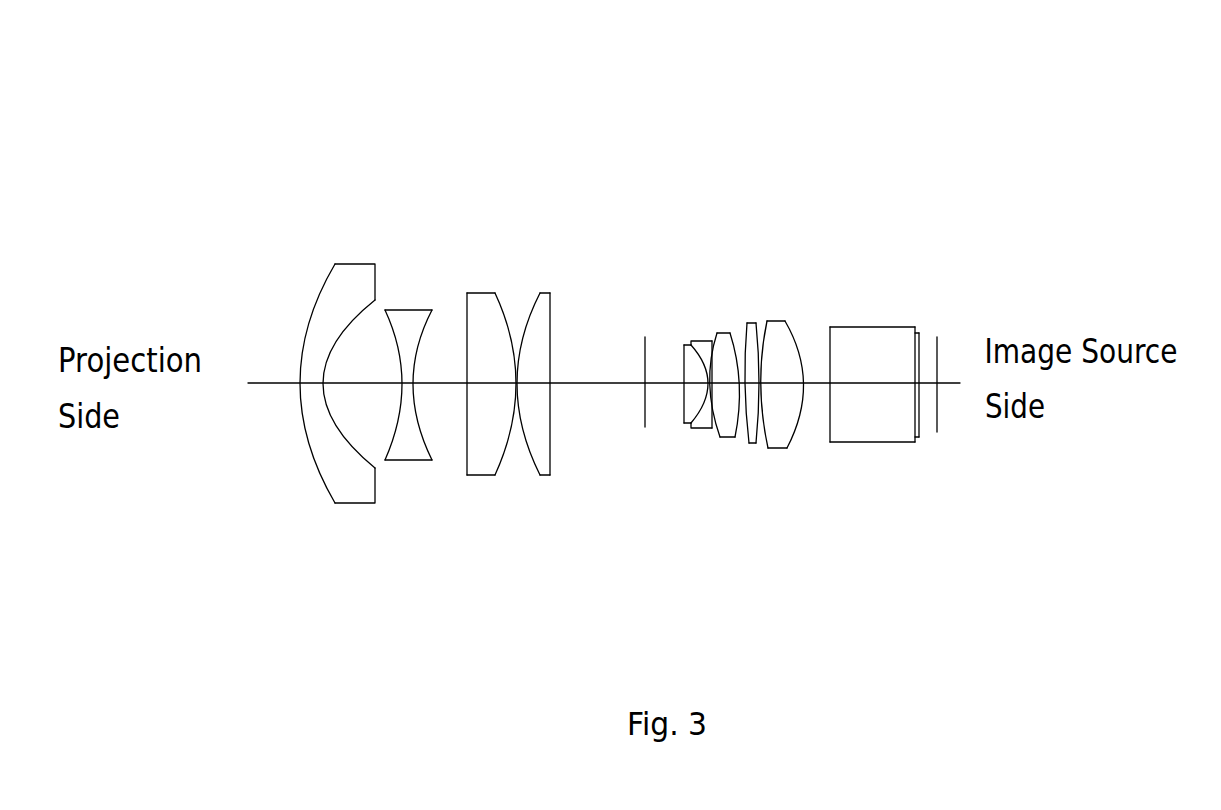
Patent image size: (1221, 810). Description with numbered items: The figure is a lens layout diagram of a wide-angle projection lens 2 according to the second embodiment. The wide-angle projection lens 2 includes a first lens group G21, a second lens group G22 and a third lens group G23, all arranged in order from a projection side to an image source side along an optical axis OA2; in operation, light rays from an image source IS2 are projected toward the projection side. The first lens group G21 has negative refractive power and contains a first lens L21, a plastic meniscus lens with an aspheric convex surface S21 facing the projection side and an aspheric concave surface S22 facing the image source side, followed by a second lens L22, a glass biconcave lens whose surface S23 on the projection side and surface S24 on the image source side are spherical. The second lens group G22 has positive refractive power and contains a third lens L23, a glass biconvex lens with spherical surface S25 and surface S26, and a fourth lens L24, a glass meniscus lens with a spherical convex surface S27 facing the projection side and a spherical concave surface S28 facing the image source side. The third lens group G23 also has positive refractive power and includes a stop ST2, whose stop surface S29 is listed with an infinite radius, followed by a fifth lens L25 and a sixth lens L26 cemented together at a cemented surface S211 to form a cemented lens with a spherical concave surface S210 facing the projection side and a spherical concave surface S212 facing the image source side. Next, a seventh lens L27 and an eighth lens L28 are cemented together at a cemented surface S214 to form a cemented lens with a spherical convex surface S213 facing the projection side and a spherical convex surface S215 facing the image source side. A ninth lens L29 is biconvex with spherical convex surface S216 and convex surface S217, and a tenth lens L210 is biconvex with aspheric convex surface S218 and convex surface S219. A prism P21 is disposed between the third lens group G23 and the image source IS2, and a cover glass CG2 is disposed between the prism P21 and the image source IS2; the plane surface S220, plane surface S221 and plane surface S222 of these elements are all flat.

The wide-angle projection lens 2 is at (360, 98).
The first lens group G21 is at (422, 170).
The second lens group G22 is at (453, 170).
The third lens group G23 is at (900, 172).
The first lens L21 is at (312, 382).
The second lens L22 is at (398, 377).
The third lens L23 is at (464, 396).
The fourth lens L24 is at (530, 381).
The stop ST2 is at (607, 335).
The fifth lens L25 is at (653, 363).
The sixth lens L26 is at (677, 378).
The seventh lens L27 is at (725, 382).
The eighth lens L28 is at (775, 391).
The ninth lens L29 is at (823, 372).
The tenth lens L210 is at (836, 339).
The prism P21 is at (911, 346).
The cover glass CG2 is at (975, 326).
The image source IS2 is at (938, 337).
The optical axis OA2 is at (257, 386).
The convex surface S21 is at (318, 475).
The concave surface S22 is at (365, 463).
The surface S23 is at (415, 445).
The surface S24 is at (417, 445).
The surface S25 is at (466, 445).
The surface S26 is at (512, 452).
The convex surface S27 is at (528, 455).
The concave surface S28 is at (548, 476).
The stop surface S29 is at (644, 428).
The concave surface S210 is at (683, 425).
The cemented surface S211 is at (692, 425).
The concave surface S212 is at (700, 428).
The convex surface S213 is at (720, 437).
The cemented surface S214 is at (733, 437).
The convex surface S215 is at (750, 443).
The convex surface S216 is at (756, 443).
The convex surface S217 is at (768, 448).
The convex surface S218 is at (776, 448).
The convex surface S219 is at (787, 448).
The plane surface S220 is at (829, 442).
The plane surface S221 is at (916, 437).
The plane surface S222 is at (920, 437).